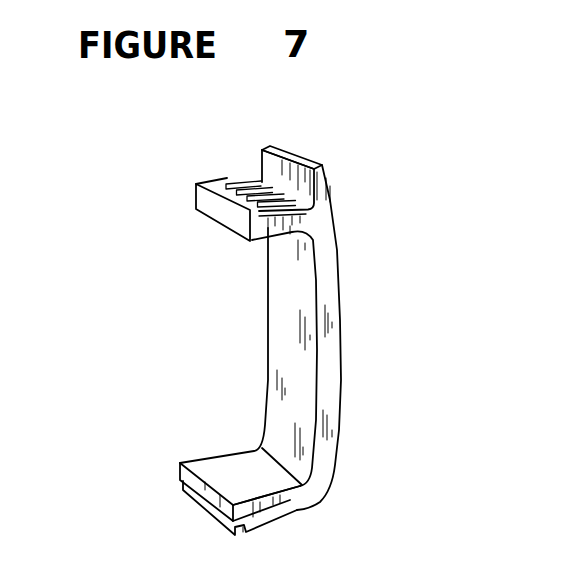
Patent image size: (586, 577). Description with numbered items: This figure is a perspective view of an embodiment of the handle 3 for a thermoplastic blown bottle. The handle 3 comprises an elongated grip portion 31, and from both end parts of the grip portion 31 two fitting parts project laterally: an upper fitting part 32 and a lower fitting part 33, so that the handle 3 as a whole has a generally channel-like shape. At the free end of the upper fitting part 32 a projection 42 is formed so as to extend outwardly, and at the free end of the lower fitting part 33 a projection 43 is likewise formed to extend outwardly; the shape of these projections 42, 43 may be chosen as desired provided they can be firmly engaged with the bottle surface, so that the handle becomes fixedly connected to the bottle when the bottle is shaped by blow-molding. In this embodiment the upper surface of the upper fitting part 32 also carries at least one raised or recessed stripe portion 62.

The handle 3 is at (272, 337).
The grip portion 31 is at (342, 347).
The upper fitting part 32 is at (282, 234).
The lower fitting part 33 is at (287, 510).
The projection 42 is at (210, 182).
The projection 43 is at (203, 508).
The raised or recessed stripe portion 62 is at (254, 183).